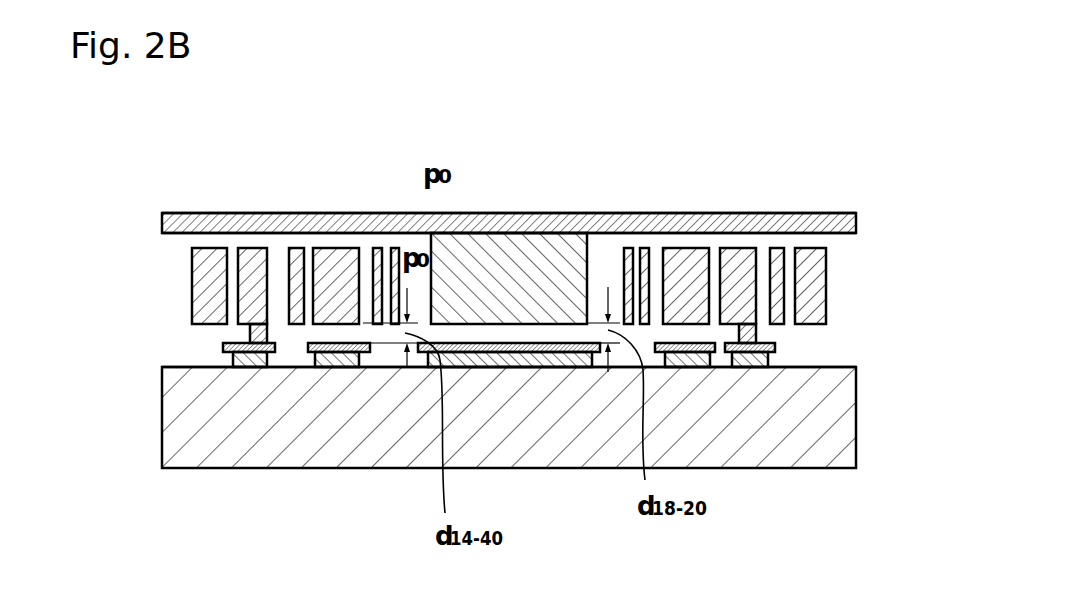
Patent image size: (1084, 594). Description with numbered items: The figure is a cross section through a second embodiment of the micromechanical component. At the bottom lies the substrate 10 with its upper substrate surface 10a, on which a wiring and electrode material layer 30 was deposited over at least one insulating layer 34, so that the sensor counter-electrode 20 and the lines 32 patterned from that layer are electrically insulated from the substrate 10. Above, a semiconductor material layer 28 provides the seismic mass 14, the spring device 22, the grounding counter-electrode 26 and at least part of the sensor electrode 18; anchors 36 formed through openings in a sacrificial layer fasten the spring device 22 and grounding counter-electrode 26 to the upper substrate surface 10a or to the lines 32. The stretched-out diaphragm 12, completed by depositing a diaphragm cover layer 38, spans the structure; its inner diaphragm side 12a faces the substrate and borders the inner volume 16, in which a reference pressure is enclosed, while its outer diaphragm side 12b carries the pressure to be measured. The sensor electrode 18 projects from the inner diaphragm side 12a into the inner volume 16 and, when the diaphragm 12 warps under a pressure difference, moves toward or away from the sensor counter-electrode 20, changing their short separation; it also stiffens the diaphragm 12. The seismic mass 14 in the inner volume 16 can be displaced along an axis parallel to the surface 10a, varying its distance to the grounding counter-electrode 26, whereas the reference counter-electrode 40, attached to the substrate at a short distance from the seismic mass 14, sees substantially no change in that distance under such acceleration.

The substrate 10 is at (178, 423).
The upper substrate surface 10a is at (378, 368).
The diaphragm 12 is at (695, 220).
The inner diaphragm side 12a is at (830, 233).
The outer diaphragm side 12b is at (782, 212).
The seismic mass 14 is at (208, 257).
The inner volume 16 is at (607, 263).
The sensor electrode 18 is at (507, 262).
The sensor counter-electrode 20 is at (533, 345).
The spring device 22 is at (392, 258).
The grounding counter-electrode 26 is at (260, 268).
The semiconductor material layer 28 is at (130, 248).
The wiring and electrode material layer 30 is at (130, 338).
The lines 32 is at (750, 357).
The insulating layer 34 is at (322, 357).
The anchors 36 is at (262, 330).
The diaphragm cover layer 38 is at (130, 213).
The reference counter-electrode 40 is at (352, 358).